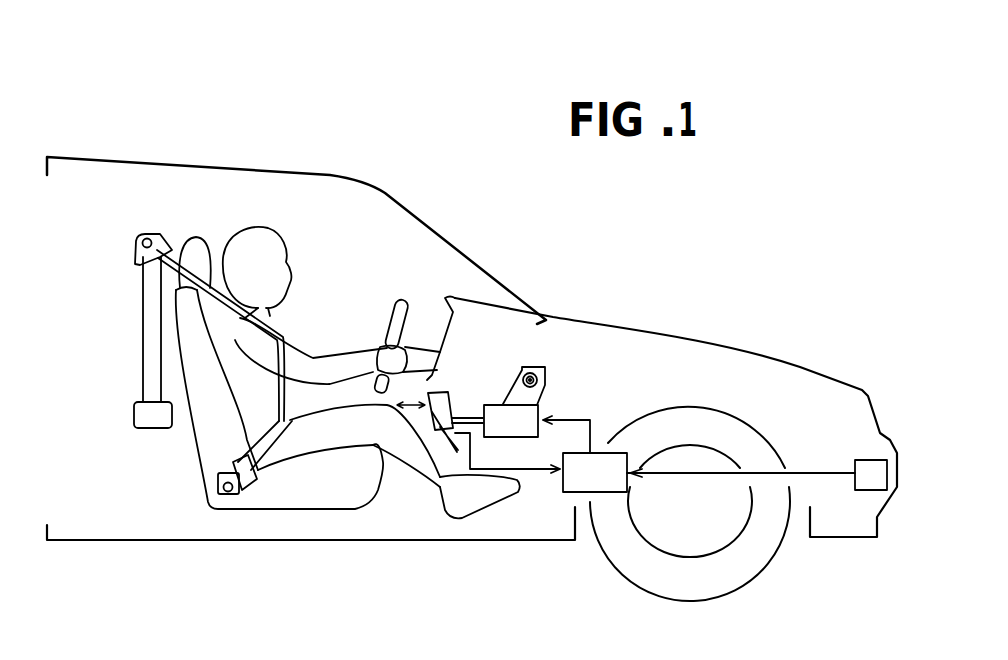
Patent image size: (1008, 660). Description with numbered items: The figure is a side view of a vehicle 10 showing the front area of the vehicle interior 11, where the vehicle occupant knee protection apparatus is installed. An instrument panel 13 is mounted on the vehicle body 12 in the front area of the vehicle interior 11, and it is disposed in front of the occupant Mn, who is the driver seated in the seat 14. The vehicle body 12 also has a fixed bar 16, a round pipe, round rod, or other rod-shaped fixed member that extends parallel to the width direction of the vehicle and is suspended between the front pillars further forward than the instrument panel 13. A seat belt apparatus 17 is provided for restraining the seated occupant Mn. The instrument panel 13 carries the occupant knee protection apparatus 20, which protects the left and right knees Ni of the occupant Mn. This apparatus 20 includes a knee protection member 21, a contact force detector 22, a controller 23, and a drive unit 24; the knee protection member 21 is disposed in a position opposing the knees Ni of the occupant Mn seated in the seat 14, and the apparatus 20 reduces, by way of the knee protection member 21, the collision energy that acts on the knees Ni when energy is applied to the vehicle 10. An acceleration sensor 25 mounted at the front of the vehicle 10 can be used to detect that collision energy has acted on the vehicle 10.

The vehicle 10 is at (101, 104).
The vehicle interior 11 is at (360, 228).
The vehicle body 12 is at (422, 230).
The instrument panel 13 is at (470, 298).
The seat 14 is at (263, 497).
The fixed bar 16 is at (541, 364).
The seat belt apparatus 17 is at (159, 188).
The occupant knee protection apparatus 20 is at (638, 390).
The knee protection member 21 is at (438, 436).
The contact force detector 22 is at (434, 430).
The controller 23 is at (610, 487).
The drive unit 24 is at (540, 405).
The acceleration sensor 25 is at (872, 483).
The occupant Mn is at (260, 250).
The knees Ni is at (370, 427).